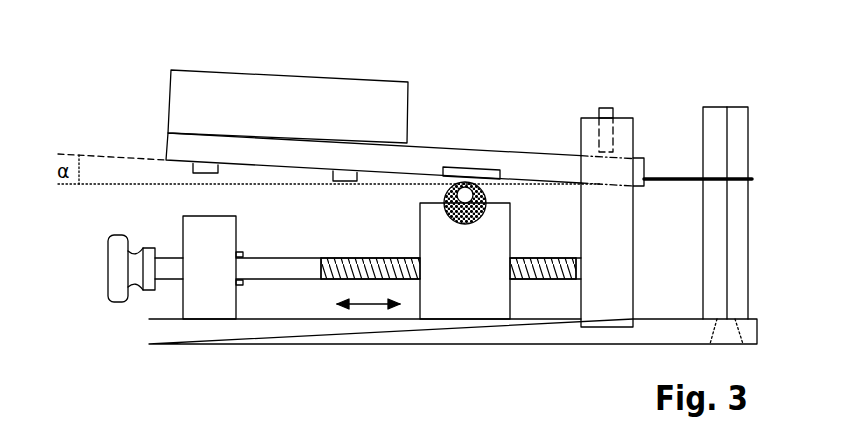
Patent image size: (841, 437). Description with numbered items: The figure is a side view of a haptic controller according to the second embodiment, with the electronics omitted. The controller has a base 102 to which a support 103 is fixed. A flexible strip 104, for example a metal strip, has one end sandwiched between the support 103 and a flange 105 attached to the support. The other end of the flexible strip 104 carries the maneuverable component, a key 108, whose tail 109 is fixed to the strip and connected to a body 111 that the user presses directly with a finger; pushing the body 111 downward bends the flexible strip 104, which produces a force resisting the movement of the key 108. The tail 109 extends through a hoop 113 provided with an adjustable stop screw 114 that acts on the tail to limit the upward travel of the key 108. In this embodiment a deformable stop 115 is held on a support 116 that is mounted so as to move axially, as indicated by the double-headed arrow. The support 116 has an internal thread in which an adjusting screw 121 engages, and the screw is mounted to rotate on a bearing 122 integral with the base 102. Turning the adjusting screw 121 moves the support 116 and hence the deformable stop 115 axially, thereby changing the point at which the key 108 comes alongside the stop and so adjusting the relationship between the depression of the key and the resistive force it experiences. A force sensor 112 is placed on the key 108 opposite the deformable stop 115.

The base 102 is at (228, 332).
The support 103 is at (740, 262).
The flexible strip 104 is at (675, 177).
The flange 105 is at (737, 152).
The key 108 is at (332, 95).
The tail 109 is at (452, 157).
The body 111 is at (192, 102).
The force sensor 112 is at (490, 172).
The hoop 113 is at (590, 135).
The adjustable stop screw 114 is at (610, 105).
The deformable stop 115 is at (442, 190).
The support 116 is at (477, 287).
The adjusting screw 121 is at (287, 268).
The bearing 122 is at (208, 237).